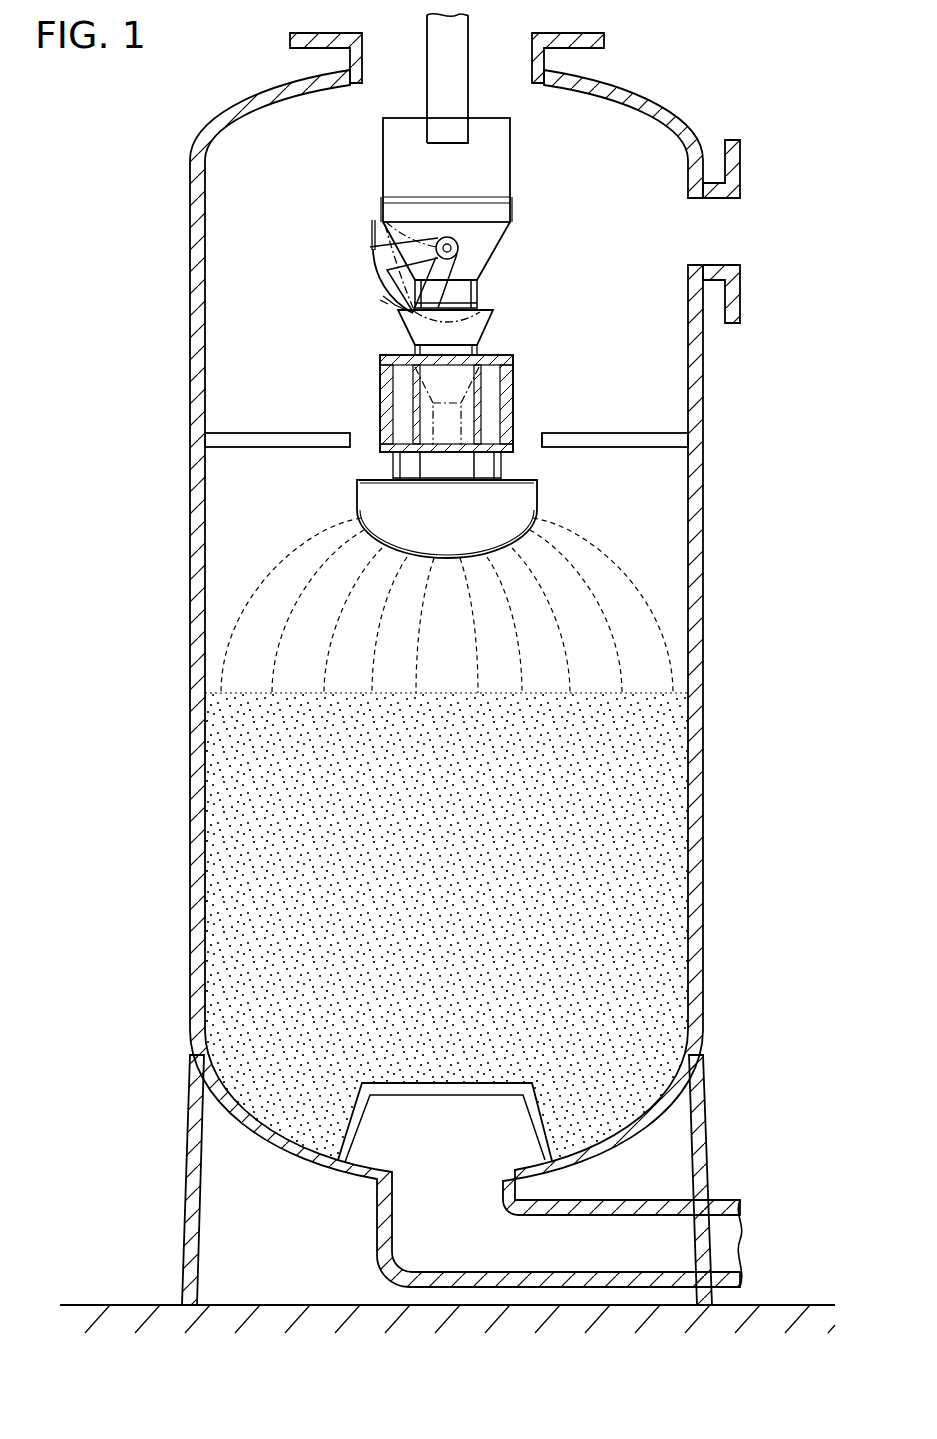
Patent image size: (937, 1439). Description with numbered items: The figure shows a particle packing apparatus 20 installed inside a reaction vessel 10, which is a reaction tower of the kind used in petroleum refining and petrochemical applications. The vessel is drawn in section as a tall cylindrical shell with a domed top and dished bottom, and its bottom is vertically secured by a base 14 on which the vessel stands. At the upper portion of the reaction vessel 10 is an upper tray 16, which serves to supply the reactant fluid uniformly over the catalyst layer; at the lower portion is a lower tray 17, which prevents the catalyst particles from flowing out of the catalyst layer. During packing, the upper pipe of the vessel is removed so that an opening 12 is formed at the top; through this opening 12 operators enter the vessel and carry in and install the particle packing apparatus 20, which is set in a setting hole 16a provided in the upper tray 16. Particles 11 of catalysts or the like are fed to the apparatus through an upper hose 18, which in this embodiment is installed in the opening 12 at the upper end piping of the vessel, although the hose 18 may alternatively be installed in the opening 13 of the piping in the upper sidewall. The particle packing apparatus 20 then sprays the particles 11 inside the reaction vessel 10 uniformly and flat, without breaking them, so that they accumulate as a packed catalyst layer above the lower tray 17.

The reaction vessel 10 is at (742, 500).
The particles 11 is at (660, 783).
The opening 12 is at (362, 53).
The opening 13 is at (720, 232).
The base 14 is at (805, 1305).
The upper tray 16 is at (660, 433).
The setting hole 16a is at (536, 433).
The lower tray 17 is at (545, 1110).
The upper hose 18 is at (468, 32).
The particle packing apparatus 20 is at (540, 338).